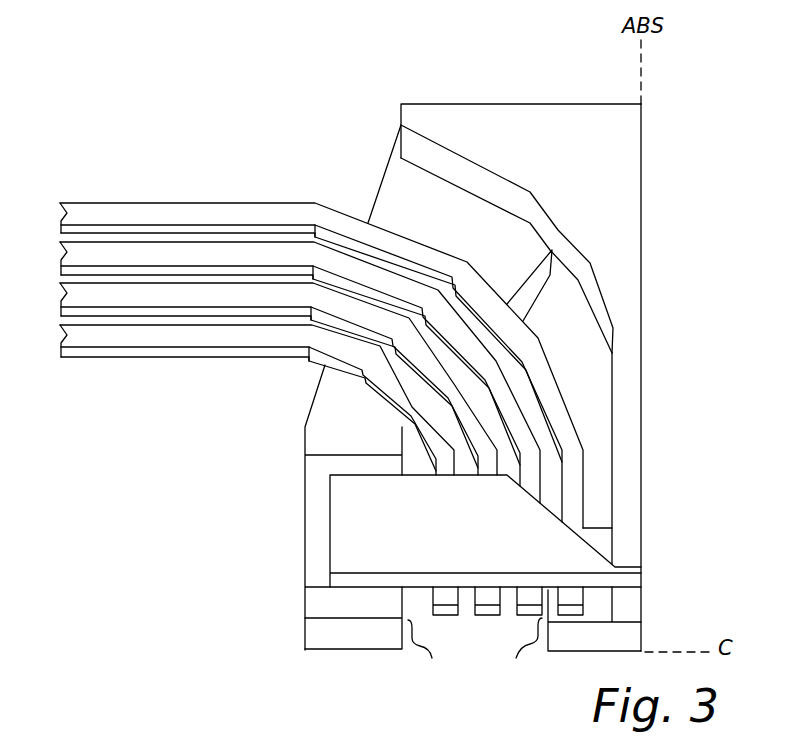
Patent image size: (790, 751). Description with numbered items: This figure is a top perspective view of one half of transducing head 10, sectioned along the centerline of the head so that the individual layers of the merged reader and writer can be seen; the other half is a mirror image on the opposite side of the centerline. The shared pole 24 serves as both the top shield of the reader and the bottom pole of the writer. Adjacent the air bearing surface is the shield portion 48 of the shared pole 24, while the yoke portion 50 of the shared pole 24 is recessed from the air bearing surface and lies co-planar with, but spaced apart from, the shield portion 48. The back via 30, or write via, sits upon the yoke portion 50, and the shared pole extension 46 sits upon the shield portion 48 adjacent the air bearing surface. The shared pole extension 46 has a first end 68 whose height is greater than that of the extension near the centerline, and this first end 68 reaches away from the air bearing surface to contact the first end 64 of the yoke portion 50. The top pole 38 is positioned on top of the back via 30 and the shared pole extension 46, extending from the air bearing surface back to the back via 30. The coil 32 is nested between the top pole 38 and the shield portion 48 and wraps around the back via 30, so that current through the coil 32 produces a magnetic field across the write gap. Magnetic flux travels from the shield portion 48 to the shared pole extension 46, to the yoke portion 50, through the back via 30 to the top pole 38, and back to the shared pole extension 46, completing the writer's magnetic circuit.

The transducing head 10 is at (216, 143).
The coil 32 is at (192, 333).
The first end of yoke portion 64 is at (397, 178).
The first end of shared pole extension 68 is at (498, 115).
The shared pole extension 46 is at (623, 222).
The top pole 38 is at (563, 520).
The back via 30 is at (325, 603).
The shared pole 24 is at (315, 630).
The yoke portion 50 is at (426, 654).
The shield portion 48 is at (517, 651).